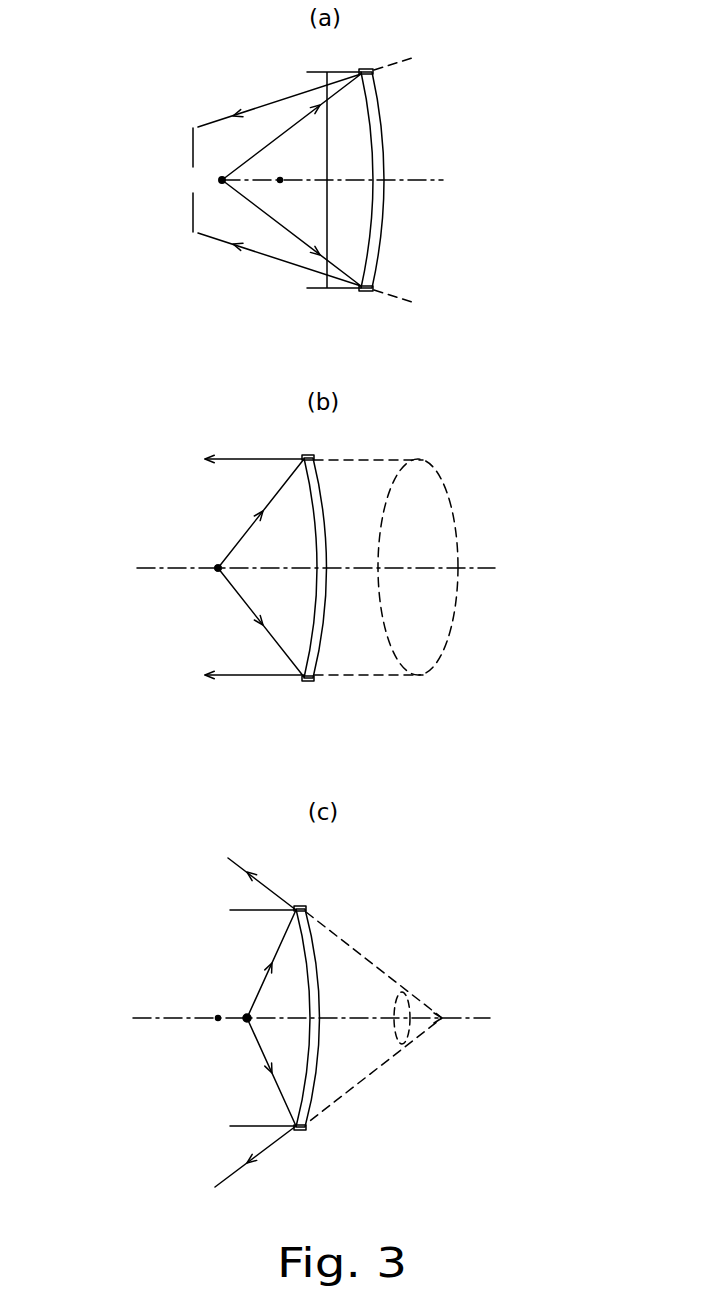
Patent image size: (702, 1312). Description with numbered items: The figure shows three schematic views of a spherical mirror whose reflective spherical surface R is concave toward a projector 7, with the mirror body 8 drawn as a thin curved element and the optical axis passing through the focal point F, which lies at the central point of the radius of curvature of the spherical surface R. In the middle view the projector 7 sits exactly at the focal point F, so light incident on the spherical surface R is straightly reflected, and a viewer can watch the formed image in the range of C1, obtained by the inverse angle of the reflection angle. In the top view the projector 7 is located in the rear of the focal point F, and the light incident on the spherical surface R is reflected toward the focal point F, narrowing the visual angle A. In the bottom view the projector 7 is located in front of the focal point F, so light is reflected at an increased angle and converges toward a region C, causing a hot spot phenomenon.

In FIG. 3a, the projector 7 is at (222, 184).
In FIG. 3b, the projector 7 is at (222, 570).
In FIG. 3c, the projector 7 is at (251, 1020).
In FIG. 3a, the reflecting mirror 8 is at (383, 245).
In FIG. 3b, the reflecting mirror 8 is at (322, 633).
In FIG. 3c, the reflecting mirror 8 is at (323, 1043).
In FIG. 3a, the spherical surface R is at (383, 122).
In FIG. 3b, the spherical surface R is at (327, 503).
In FIG. 3c, the spherical surface R is at (325, 997).
In FIG. 3a, the focal point F is at (278, 195).
In FIG. 3b, the focal point F is at (214, 584).
In FIG. 3c, the focal point F is at (216, 1036).
In FIG. 3a, the visual angle A is at (192, 180).
In FIG. 3b, the range of C1 is at (448, 515).
In FIG. 3c, the converging light beam cross-section C is at (406, 1040).